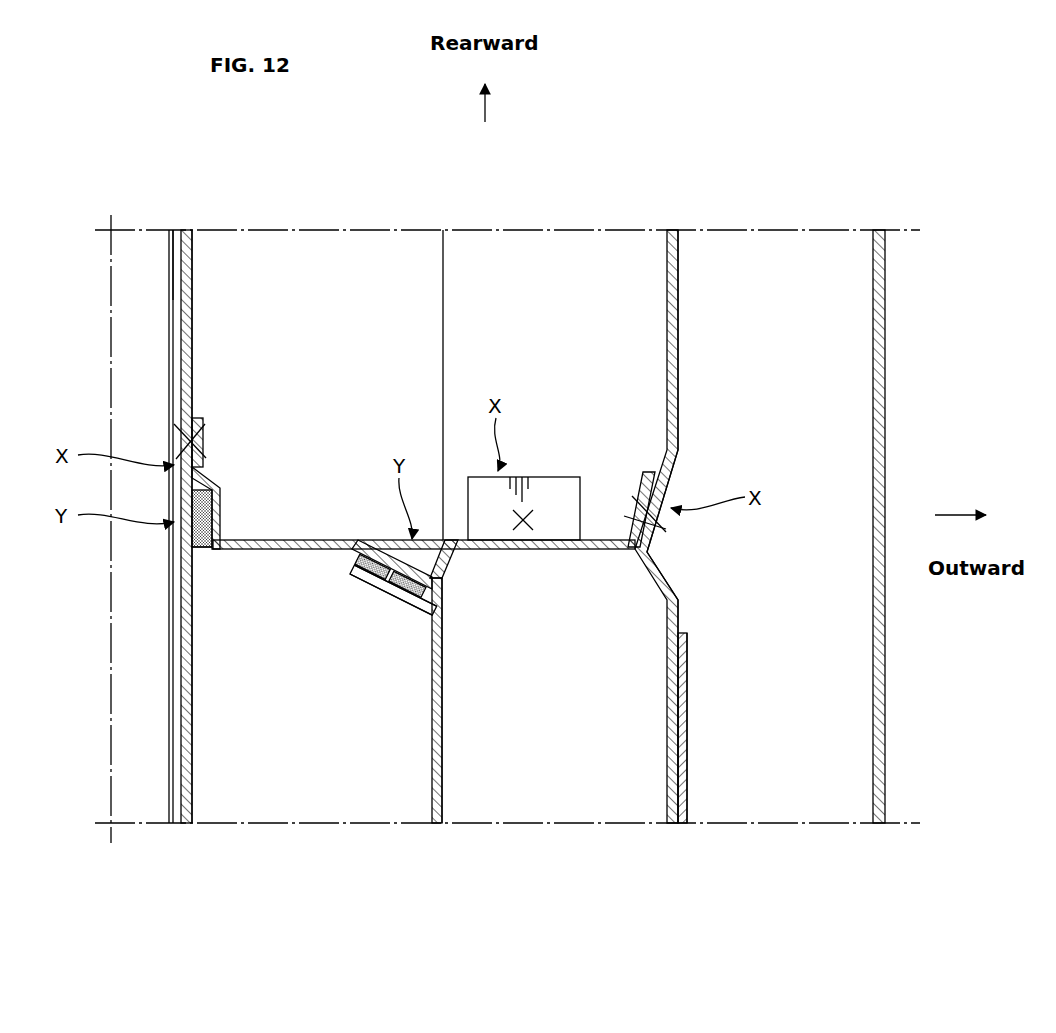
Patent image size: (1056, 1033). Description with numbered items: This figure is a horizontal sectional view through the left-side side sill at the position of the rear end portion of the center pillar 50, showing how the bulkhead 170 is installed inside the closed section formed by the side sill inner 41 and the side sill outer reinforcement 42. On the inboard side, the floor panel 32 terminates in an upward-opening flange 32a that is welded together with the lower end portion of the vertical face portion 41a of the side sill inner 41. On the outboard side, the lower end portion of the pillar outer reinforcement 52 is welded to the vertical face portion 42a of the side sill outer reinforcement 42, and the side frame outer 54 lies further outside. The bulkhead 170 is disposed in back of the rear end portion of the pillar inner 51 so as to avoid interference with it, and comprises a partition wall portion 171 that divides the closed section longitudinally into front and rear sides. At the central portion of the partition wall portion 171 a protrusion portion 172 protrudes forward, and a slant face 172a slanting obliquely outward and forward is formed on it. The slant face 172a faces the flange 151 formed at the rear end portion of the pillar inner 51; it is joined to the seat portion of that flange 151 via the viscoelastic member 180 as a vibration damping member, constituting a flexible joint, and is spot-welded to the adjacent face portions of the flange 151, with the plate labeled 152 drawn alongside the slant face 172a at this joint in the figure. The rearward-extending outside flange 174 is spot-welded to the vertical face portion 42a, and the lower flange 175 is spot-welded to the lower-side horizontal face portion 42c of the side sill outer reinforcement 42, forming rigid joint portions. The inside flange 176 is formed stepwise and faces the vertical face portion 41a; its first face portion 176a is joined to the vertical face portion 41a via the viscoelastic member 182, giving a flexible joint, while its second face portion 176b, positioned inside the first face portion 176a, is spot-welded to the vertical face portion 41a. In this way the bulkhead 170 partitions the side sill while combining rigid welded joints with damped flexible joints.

The floor panel 32 is at (128, 245).
The flange 32a is at (175, 232).
The side sill inner 41 is at (183, 338).
The vertical face portion of the side sill inner 41a is at (190, 376).
The side sill outer reinforcement 42 is at (680, 312).
The vertical face portion of the side sill outer reinforcement 42a is at (680, 390).
The lower-side horizontal face portion 42c is at (543, 255).
The side frame outer 54 is at (886, 322).
The center pillar 50 is at (691, 719).
The pillar inner 51 is at (432, 793).
The pillar outer reinforcement 52 is at (690, 785).
The bulkhead 170 is at (592, 585).
The partition wall portion 171 is at (312, 538).
The protrusion portion 172 is at (463, 572).
The slant face 172a is at (392, 583).
The outside flange 174 is at (628, 518).
The lower flange 175 is at (553, 490).
The inside flange 176 is at (226, 484).
The first face portion of the inside flange 176a is at (213, 515).
The second face portion of the inside flange 176b is at (204, 447).
The viscoelastic member 180 is at (362, 557).
The viscoelastic member 182 is at (203, 548).
The flange 151 is at (408, 613).
The upper plate 152 is at (433, 598).